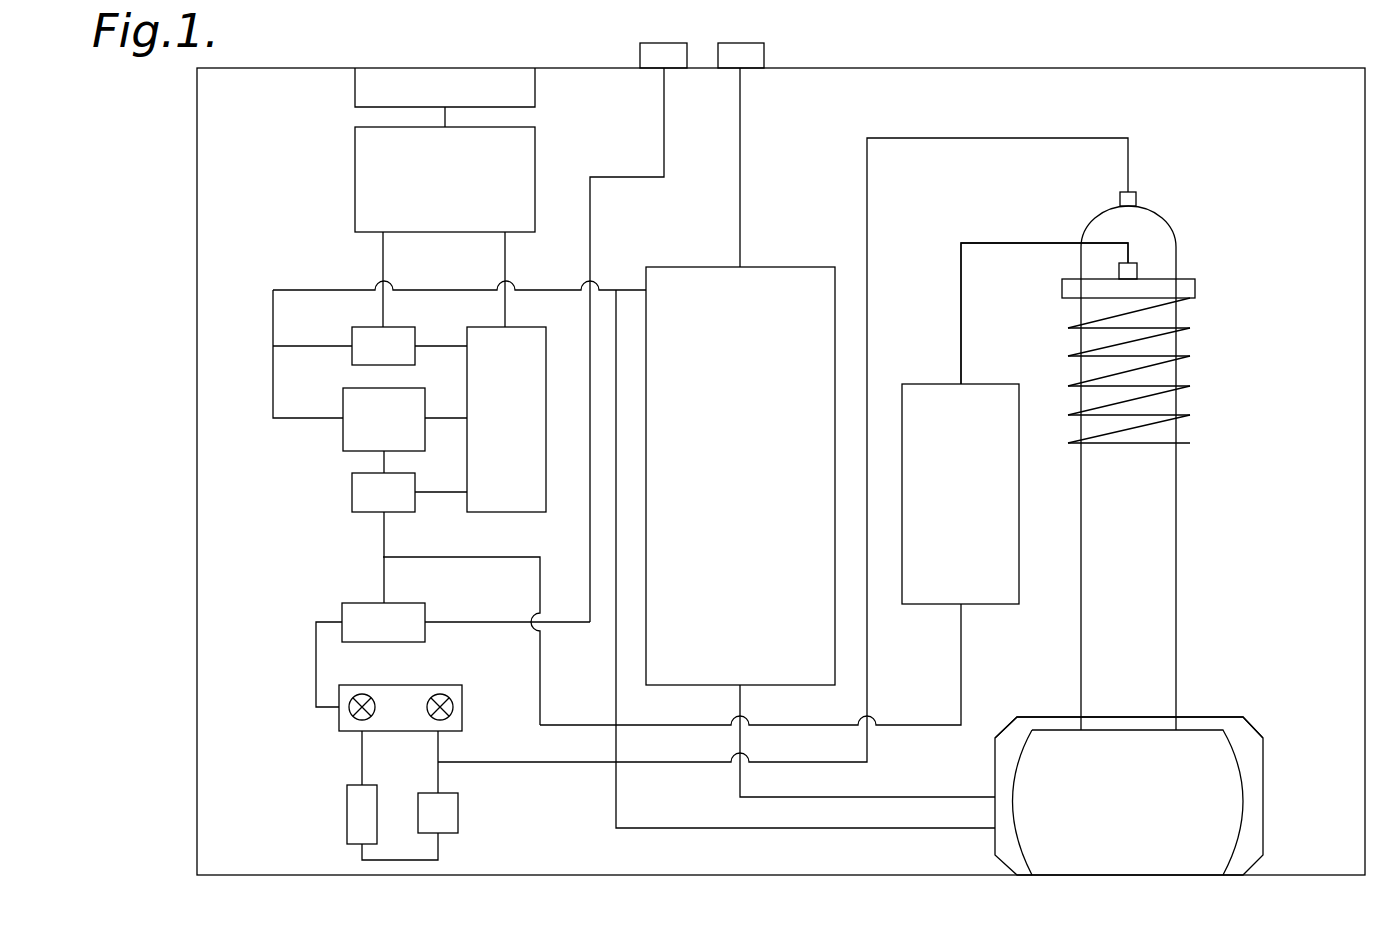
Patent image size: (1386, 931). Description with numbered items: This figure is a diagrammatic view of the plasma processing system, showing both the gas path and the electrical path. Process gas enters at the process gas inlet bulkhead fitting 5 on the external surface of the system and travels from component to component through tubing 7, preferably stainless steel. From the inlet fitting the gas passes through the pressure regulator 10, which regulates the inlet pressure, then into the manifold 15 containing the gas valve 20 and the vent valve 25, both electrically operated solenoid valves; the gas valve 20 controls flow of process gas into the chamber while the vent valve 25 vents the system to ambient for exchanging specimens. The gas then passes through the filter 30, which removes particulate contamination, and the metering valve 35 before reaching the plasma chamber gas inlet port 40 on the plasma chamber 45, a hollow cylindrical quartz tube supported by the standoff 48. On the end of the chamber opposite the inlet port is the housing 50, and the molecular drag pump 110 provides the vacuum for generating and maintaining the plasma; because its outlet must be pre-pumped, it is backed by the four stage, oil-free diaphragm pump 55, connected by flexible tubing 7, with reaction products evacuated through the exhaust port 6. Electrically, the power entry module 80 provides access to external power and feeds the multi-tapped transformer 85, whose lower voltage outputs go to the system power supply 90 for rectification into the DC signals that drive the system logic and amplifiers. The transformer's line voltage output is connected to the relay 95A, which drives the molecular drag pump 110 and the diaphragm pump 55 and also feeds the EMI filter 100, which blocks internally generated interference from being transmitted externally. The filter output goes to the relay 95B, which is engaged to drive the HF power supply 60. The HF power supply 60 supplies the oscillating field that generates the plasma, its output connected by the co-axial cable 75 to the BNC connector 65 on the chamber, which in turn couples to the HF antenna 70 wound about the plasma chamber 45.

The process gas inlet bulkhead fitting 5 is at (662, 48).
The exhaust port 6 is at (742, 48).
The tubing 7 is at (664, 128).
The pressure regulator 10 is at (356, 608).
The manifold 15 is at (398, 690).
The gas valve 20 is at (353, 718).
The vent valve 25 is at (452, 708).
The filter 30 is at (347, 814).
The metering valve 35 is at (458, 815).
The plasma chamber gas inlet port 40 is at (1136, 199).
The plasma chamber 45 is at (1150, 580).
The standoff 48 is at (1195, 286).
The housing 50 is at (1152, 815).
The diaphragm pump 55 is at (766, 497).
The HF power supply 60 is at (980, 502).
The BNC connector 65 is at (1137, 271).
The HF antenna 70 is at (1188, 350).
The co-axial cable 75 is at (1026, 243).
The power entry module 80 is at (360, 88).
The transformer 85 is at (468, 200).
The system power supply 90 is at (528, 433).
The relay 95A is at (372, 330).
The relay 95B is at (358, 499).
The EMI filter 100 is at (405, 432).
The molecular drag pump 110 is at (1248, 725).